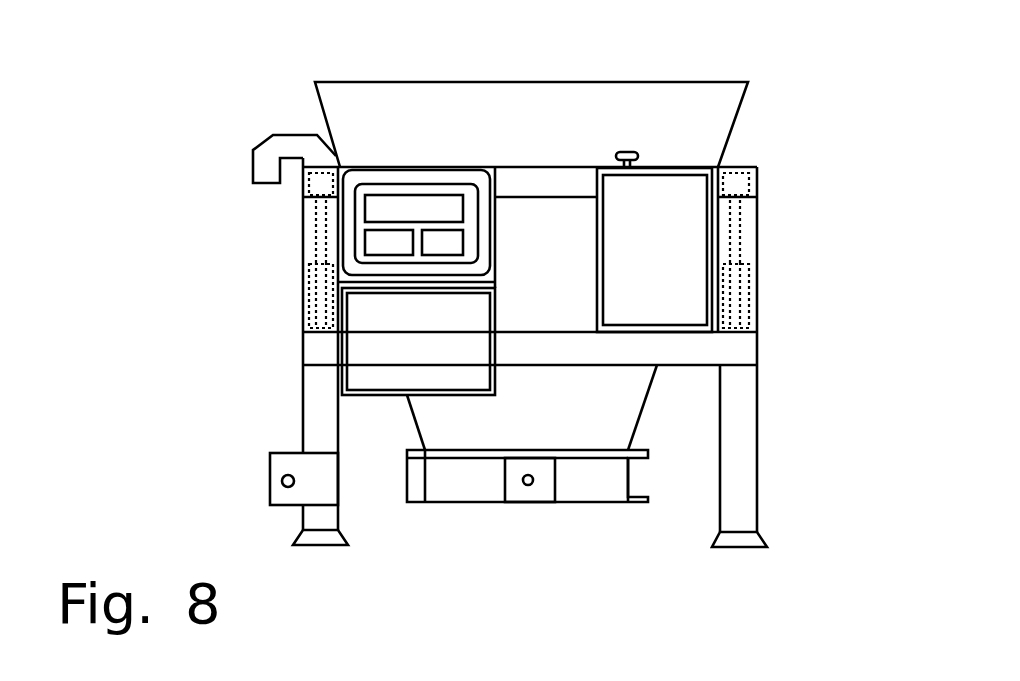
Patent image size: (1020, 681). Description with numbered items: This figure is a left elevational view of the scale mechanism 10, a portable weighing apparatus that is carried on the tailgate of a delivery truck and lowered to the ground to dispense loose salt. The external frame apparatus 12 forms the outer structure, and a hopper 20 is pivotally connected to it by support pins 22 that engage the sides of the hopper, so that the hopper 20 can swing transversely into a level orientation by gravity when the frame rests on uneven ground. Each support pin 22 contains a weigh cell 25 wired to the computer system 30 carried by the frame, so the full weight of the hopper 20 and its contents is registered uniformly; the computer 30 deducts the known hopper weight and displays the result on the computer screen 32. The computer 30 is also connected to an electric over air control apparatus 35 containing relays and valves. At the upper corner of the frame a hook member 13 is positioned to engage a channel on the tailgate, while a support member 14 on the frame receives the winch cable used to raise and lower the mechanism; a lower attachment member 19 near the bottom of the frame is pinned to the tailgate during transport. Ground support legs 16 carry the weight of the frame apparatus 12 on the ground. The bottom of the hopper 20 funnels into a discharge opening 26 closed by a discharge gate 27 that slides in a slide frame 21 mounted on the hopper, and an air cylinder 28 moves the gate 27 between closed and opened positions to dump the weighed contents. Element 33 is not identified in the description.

The scale mechanism 10 is at (244, 378).
The frame apparatus 12 is at (318, 352).
The hook members 13 is at (257, 168).
The support member 14 is at (317, 158).
The ground support legs 16 is at (315, 522).
The lower attachment members 19 is at (268, 483).
The hopper 20 is at (725, 122).
The slide frame 21 is at (645, 505).
The support pins 22 is at (305, 280).
The weigh cell 25 is at (303, 232).
The discharge opening 26 is at (560, 539).
The discharge gate 27 is at (503, 460).
The air cylinder 28 is at (528, 487).
The computer system 30 is at (406, 305).
The computer screen 32 is at (418, 205).
The knob 33 is at (625, 151).
The electric over air control apparatus 35 is at (657, 295).